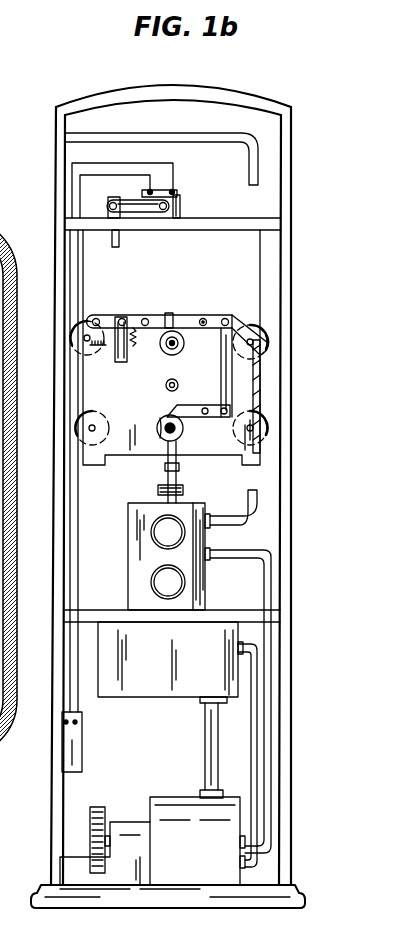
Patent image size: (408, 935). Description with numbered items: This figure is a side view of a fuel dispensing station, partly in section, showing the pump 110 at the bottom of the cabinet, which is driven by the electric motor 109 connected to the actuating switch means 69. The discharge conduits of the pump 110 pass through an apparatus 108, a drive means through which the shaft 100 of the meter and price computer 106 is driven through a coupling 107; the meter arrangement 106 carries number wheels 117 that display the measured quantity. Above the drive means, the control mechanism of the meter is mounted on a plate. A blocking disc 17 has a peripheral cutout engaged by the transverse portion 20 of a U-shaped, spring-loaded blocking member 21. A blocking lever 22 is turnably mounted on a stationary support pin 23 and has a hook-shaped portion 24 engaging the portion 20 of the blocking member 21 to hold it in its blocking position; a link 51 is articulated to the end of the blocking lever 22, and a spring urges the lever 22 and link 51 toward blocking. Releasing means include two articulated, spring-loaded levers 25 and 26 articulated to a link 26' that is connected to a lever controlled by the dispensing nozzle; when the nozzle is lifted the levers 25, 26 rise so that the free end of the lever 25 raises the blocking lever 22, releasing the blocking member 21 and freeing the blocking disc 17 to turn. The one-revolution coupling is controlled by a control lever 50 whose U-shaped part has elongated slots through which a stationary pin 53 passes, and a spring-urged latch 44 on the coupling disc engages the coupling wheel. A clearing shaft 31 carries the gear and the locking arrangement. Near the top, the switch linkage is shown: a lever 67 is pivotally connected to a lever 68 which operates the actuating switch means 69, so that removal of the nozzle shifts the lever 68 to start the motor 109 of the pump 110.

The lever 68 is at (128, 200).
The actuating switch means 69 is at (185, 204).
The lever 67 is at (114, 247).
The electric motor 109 is at (78, 287).
The spring-loaded lever 26 is at (122, 318).
The spring-loaded lever 25 is at (134, 320).
The hook-shaped portion 24 is at (170, 313).
The transverse portion 20 is at (177, 333).
The stationary support pin 23 is at (205, 318).
The blocking lever 22 is at (232, 316).
The number wheels 117 is at (268, 336).
The blocking disc 17 is at (163, 346).
The blocking member 21 is at (182, 345).
The link 26' is at (109, 362).
The link 51 is at (233, 377).
The meter and price computer 106 is at (262, 393).
The shaft 31 is at (165, 387).
The stationary pin 53 is at (204, 408).
The control lever 50 is at (189, 418).
The shaft 100 is at (165, 468).
The latch 44 is at (178, 453).
The coupling 107 is at (185, 489).
The apparatus 108 is at (128, 547).
The pump 110 is at (172, 803).